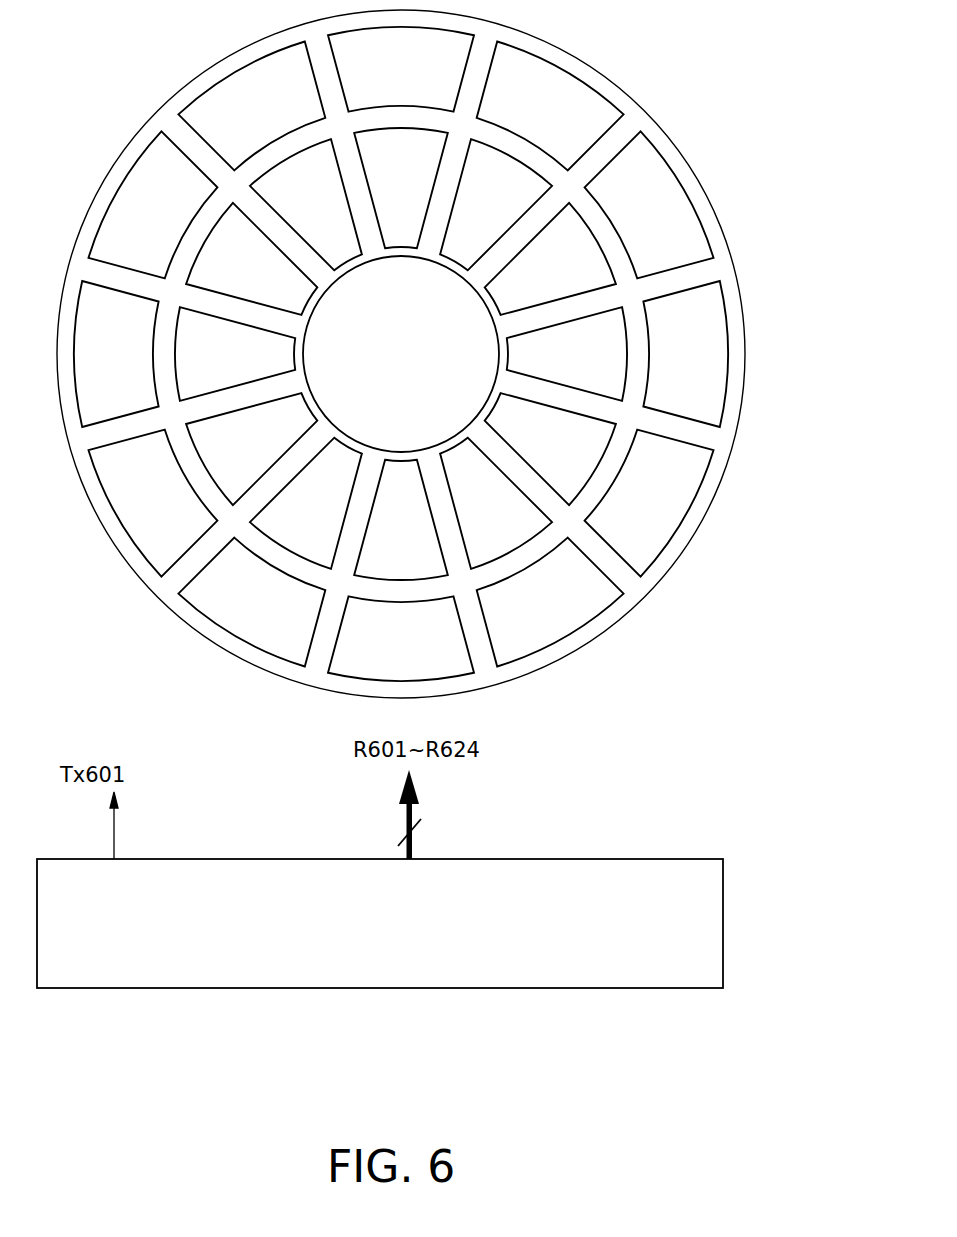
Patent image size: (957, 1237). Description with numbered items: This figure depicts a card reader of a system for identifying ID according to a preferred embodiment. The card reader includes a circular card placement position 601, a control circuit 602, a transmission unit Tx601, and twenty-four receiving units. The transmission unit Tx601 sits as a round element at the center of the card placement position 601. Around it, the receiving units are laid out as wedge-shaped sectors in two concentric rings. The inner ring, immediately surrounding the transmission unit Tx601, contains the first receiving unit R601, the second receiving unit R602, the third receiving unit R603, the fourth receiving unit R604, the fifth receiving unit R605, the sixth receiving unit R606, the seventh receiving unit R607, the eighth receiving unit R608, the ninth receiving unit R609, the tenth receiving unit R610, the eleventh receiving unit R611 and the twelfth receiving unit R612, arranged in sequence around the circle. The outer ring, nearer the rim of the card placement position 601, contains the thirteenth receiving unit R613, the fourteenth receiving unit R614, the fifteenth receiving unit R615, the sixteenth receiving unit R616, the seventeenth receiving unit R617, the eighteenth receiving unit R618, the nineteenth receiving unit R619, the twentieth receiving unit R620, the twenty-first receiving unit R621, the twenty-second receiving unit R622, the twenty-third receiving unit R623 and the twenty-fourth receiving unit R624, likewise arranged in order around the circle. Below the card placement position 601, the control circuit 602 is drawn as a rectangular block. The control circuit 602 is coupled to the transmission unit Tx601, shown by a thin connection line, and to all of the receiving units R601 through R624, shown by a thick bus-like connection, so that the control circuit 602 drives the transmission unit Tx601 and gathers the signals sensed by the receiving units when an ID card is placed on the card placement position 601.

The card placement position 601 is at (632, 100).
The control circuit 602 is at (723, 923).
The transmission unit Tx601 is at (401, 354).
The first receiving unit R601 is at (496, 204).
The second receiving unit R602 is at (550, 259).
The third receiving unit R603 is at (567, 354).
The fourth receiving unit R604 is at (550, 449).
The fifth receiving unit R605 is at (496, 503).
The sixth receiving unit R606 is at (401, 520).
The seventh receiving unit R607 is at (306, 503).
The eighth receiving unit R608 is at (251, 449).
The ninth receiving unit R609 is at (235, 354).
The tenth receiving unit R610 is at (251, 259).
The eleventh receiving unit R611 is at (306, 204).
The twelfth receiving unit R612 is at (401, 188).
The thirteenth receiving unit R613 is at (550, 106).
The fourteenth receiving unit R614 is at (649, 204).
The fifteenth receiving unit R615 is at (685, 354).
The sixteenth receiving unit R616 is at (649, 503).
The seventeenth receiving unit R617 is at (550, 602).
The eighteenth receiving unit R618 is at (401, 638).
The nineteenth receiving unit R619 is at (251, 602).
The twentieth receiving unit R620 is at (153, 503).
The twenty first receiving unit R621 is at (116, 354).
The twenty second receiving unit R622 is at (153, 204).
The twenty third receiving unit R623 is at (251, 106).
The twenty fourth receiving unit R624 is at (401, 69).